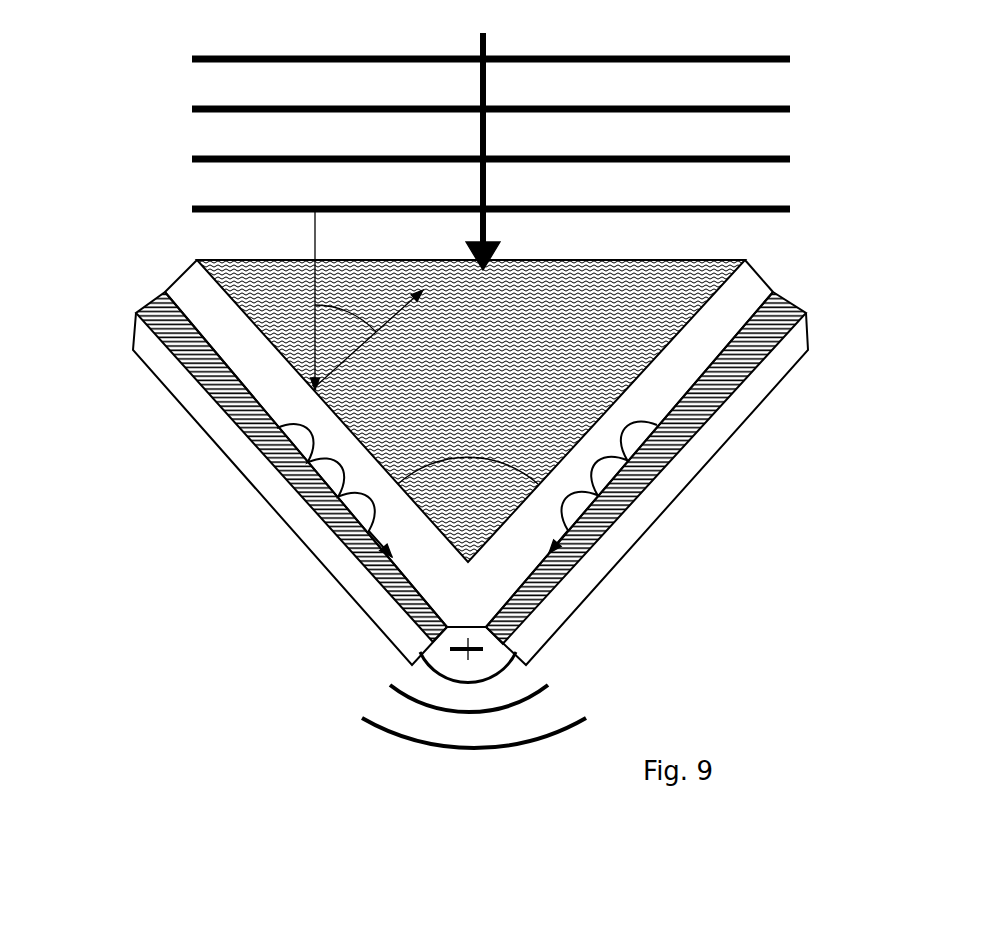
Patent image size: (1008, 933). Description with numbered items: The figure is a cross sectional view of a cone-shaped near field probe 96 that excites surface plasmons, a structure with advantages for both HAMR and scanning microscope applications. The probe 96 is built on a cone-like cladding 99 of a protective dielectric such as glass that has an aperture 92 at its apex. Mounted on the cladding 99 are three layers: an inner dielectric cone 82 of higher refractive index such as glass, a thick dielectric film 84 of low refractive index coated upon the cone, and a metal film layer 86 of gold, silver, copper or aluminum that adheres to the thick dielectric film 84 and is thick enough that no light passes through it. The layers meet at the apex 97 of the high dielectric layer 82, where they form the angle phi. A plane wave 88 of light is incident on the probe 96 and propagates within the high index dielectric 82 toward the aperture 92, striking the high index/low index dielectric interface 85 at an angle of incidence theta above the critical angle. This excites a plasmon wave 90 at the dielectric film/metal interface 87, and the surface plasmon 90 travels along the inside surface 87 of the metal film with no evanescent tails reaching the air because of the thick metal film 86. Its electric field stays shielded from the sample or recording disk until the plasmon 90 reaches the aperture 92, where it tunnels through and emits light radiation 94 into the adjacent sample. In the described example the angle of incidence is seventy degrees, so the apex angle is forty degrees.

The inner dielectric cone 82 is at (428, 362).
The thick dielectric film 84 is at (274, 361).
The high refractive index/low refractive index dielectric layer interface 85 is at (667, 353).
The metal film layer 86 is at (543, 602).
The low refractive index dielectric film layer/metal layer interface 87 is at (767, 352).
The plane wave 88 is at (152, 140).
The plasmon wave 90 is at (657, 477).
The aperture 92 is at (468, 640).
The light radiation 94 is at (563, 690).
The near field probe 96 is at (288, 462).
The apex 97 is at (472, 563).
The cladding 99 is at (208, 417).